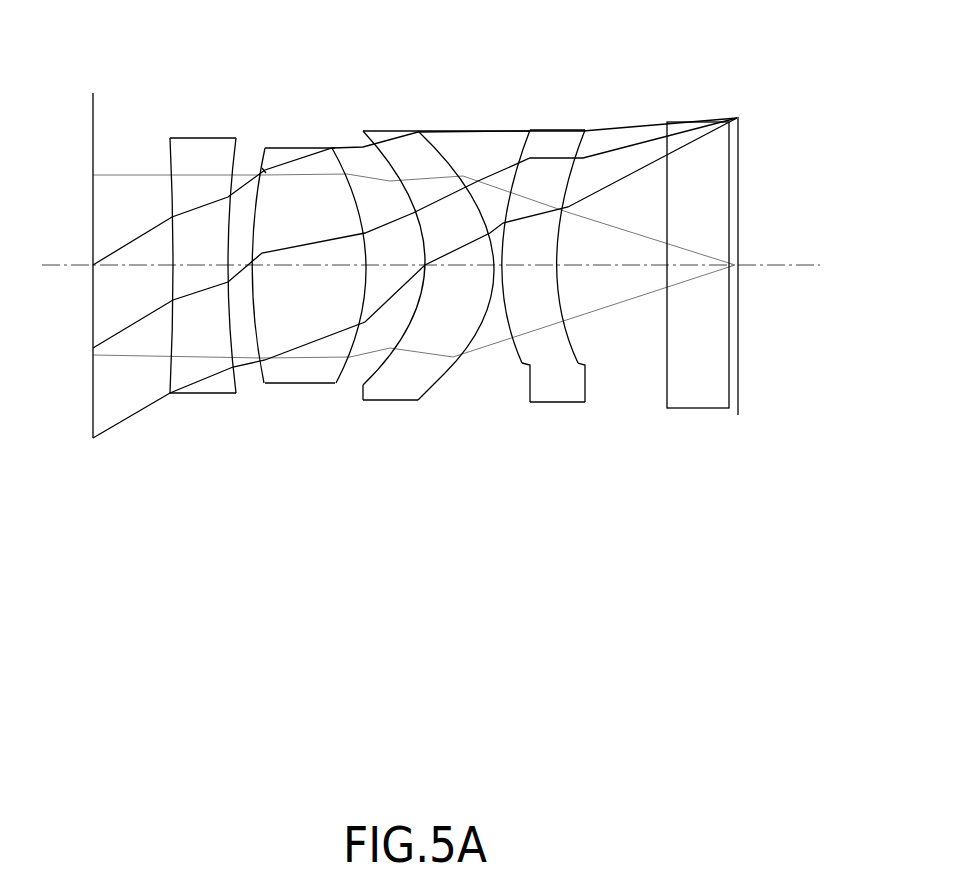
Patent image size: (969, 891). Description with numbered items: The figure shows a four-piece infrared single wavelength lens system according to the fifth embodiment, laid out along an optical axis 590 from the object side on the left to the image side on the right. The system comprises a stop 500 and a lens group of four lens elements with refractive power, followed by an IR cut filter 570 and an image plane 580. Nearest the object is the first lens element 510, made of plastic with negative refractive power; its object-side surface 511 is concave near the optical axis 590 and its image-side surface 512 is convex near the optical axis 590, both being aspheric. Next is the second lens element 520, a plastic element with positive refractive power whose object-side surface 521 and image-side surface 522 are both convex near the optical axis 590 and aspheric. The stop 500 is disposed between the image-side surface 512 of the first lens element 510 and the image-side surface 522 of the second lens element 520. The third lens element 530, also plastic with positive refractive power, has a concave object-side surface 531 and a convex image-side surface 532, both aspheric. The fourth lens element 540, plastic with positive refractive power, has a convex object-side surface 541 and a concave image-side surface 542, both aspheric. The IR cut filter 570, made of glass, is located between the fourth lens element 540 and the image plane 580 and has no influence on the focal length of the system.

The stop 500 is at (258, 163).
The first lens element 510 is at (193, 296).
The object-side surface 511 is at (170, 373).
The image-side surface 512 is at (235, 362).
The second lens element 520 is at (308, 297).
The object-side surface 521 is at (261, 362).
The image-side surface 522 is at (365, 268).
The third lens element 530 is at (446, 293).
The object-side surface 531 is at (365, 378).
The image-side surface 532 is at (445, 372).
The fourth lens element 540 is at (567, 293).
The object-side surface 541 is at (522, 362).
The image-side surface 542 is at (580, 363).
The IR cut filter 570 is at (687, 113).
The image plane 580 is at (740, 380).
The optical axis 590 is at (62, 263).